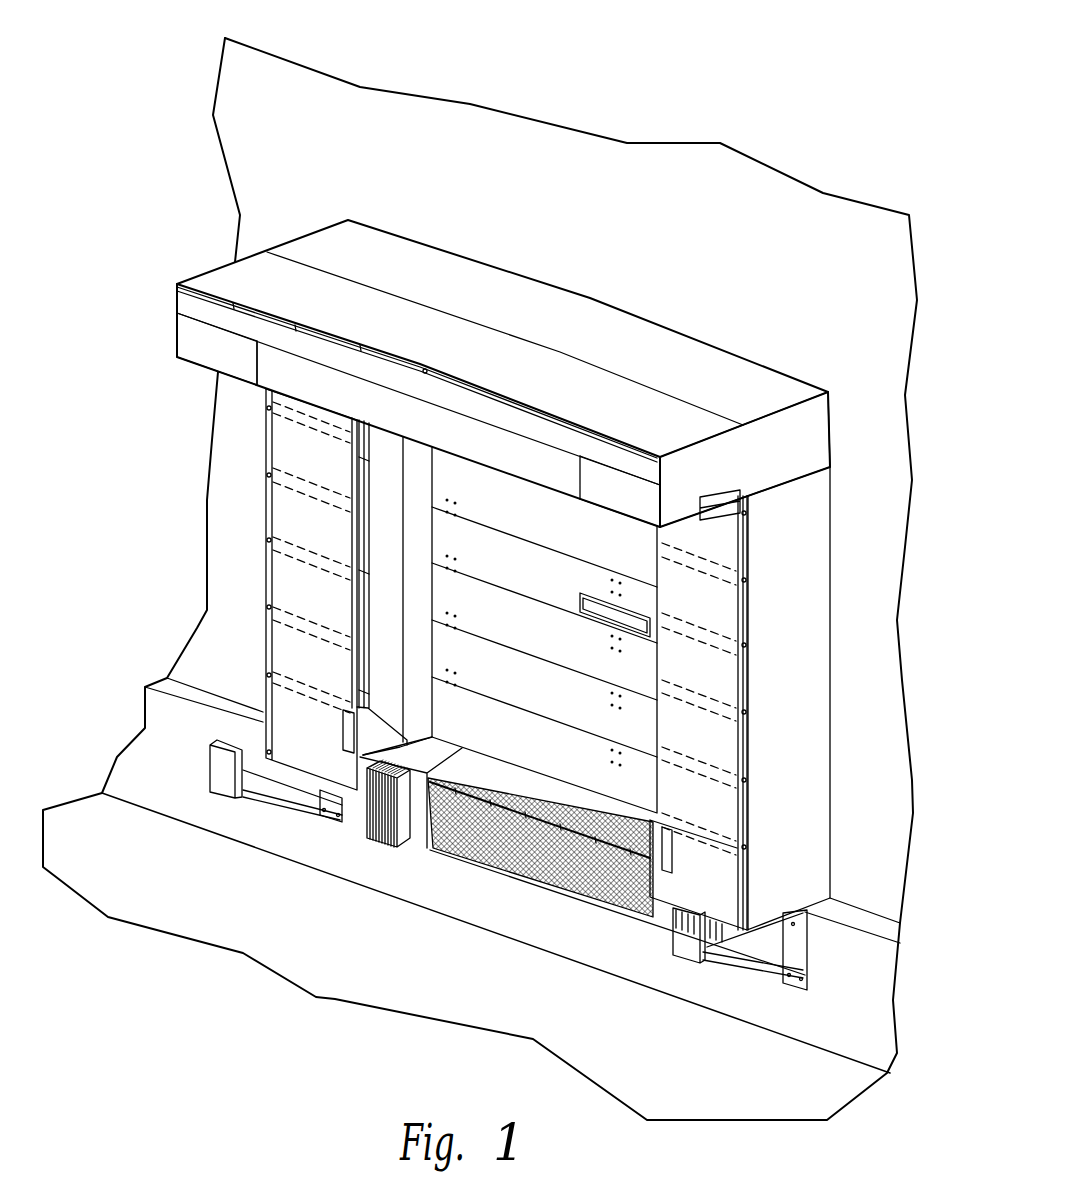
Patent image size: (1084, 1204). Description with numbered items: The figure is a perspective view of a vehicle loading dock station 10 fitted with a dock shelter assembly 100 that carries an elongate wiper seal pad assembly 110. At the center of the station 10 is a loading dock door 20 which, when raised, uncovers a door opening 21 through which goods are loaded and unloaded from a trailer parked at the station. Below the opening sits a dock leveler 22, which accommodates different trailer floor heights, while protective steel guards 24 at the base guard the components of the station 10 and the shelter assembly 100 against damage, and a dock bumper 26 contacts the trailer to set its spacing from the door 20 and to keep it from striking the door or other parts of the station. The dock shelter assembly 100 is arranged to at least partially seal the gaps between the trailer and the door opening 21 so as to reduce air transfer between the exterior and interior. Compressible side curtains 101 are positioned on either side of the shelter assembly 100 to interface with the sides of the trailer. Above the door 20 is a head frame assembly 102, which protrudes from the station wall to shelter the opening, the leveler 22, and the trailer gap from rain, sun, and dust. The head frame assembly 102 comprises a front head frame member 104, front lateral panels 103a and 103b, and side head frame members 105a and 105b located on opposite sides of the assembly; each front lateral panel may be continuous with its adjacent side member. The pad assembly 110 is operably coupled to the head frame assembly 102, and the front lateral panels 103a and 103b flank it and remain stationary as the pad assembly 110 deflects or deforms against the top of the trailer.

The vehicle loading dock station 10 is at (831, 158).
The dock shelter assembly 100 is at (209, 238).
The head frame assembly 102 is at (600, 292).
The front head frame member 104 is at (197, 303).
The side head frame member 105a is at (201, 272).
The side head frame member 105b is at (812, 430).
The front lateral panel 103a is at (197, 341).
The front lateral panel 103b is at (632, 500).
The wiper seal pad assembly 110 is at (300, 405).
The side curtains 101 is at (295, 505).
The door opening 21 is at (415, 580).
The loading dock door 20 is at (455, 655).
The dock leveler 22 is at (517, 848).
The dock bumpers 26 is at (377, 823).
The protective steel guards 24 is at (218, 772).